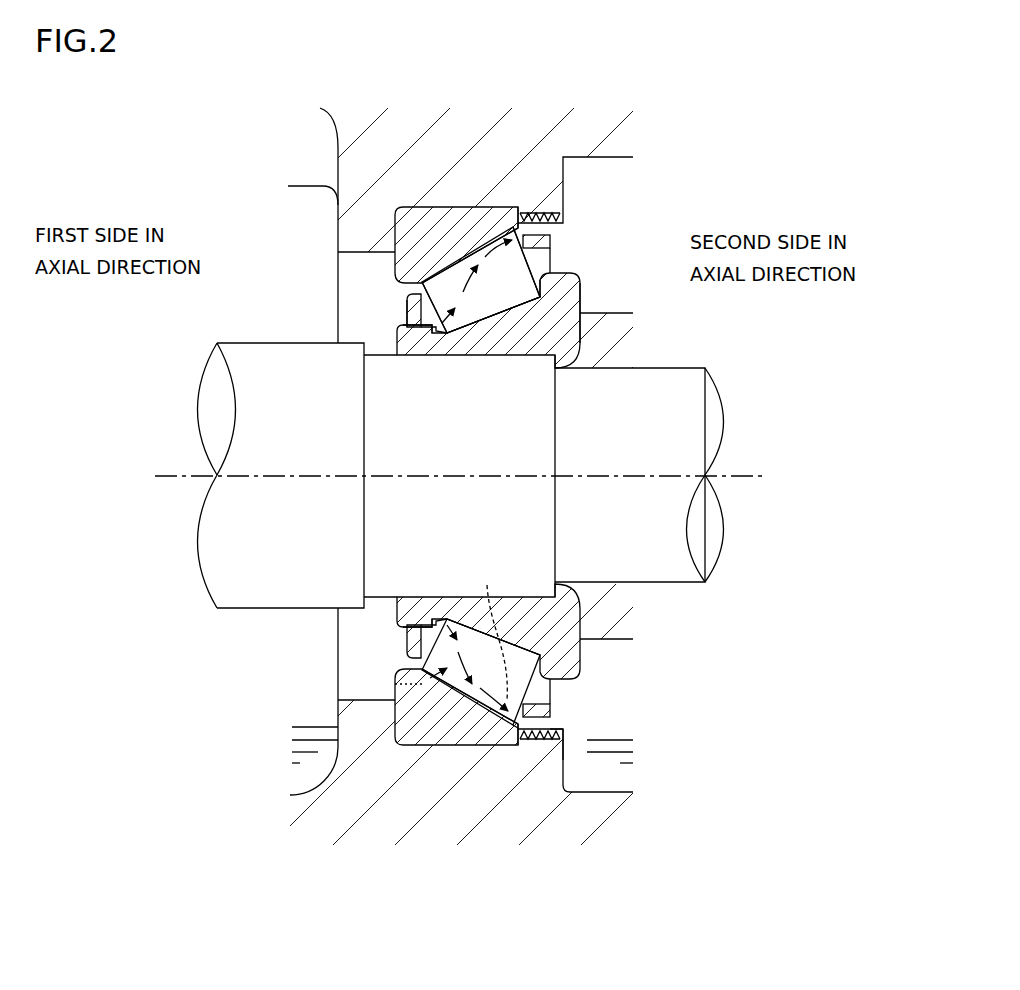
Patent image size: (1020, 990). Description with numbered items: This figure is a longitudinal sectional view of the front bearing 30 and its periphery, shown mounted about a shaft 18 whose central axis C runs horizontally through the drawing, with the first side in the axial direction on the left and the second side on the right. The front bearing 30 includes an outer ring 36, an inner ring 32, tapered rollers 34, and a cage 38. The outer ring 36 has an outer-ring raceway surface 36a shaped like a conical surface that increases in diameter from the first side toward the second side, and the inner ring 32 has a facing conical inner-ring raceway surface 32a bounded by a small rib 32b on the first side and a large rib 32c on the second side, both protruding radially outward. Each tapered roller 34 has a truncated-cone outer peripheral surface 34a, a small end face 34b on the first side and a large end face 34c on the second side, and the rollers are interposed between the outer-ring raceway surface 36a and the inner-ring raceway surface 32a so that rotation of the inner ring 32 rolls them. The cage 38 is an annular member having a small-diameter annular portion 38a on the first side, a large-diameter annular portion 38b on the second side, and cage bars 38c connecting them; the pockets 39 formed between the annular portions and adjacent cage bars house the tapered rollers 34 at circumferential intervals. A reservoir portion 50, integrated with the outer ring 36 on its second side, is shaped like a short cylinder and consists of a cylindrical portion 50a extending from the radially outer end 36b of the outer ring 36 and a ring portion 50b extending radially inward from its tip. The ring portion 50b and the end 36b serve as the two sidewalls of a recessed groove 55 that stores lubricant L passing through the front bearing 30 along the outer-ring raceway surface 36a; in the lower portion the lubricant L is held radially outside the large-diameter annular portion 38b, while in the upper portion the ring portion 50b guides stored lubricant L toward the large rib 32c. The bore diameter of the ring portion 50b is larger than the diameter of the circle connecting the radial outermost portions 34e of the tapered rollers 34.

The shaft 18 is at (251, 341).
The front bearing 30 is at (479, 431).
The inner ring 32 is at (533, 467).
The inner-ring raceway surface 32a is at (485, 318).
The cone front face rib (small rib) 32b is at (433, 337).
The large rib 32c is at (560, 274).
The tapered roller 34 is at (473, 431).
The outer peripheral surface 34a is at (512, 306).
The small end face 34b is at (405, 312).
The large end face 34c is at (543, 289).
The radial outermost portion 34e is at (518, 724).
The outer ring 36 is at (469, 411).
The outer-ring raceway surface 36a is at (483, 250).
The radially outer end of the outer ring 36b is at (513, 205).
The cage 38 is at (458, 476).
The small-diameter annular portion 38a is at (405, 299).
The large-diameter annular portion 38b is at (551, 242).
The cage bar 38c is at (486, 631).
The pocket 39 is at (395, 684).
The reservoir portion 50 is at (565, 476).
The cylindrical portion 50a is at (526, 741).
The ring portion 50b is at (564, 728).
The recessed groove 55 is at (556, 723).
The central axis C is at (744, 470).
The lubricant L is at (316, 775).